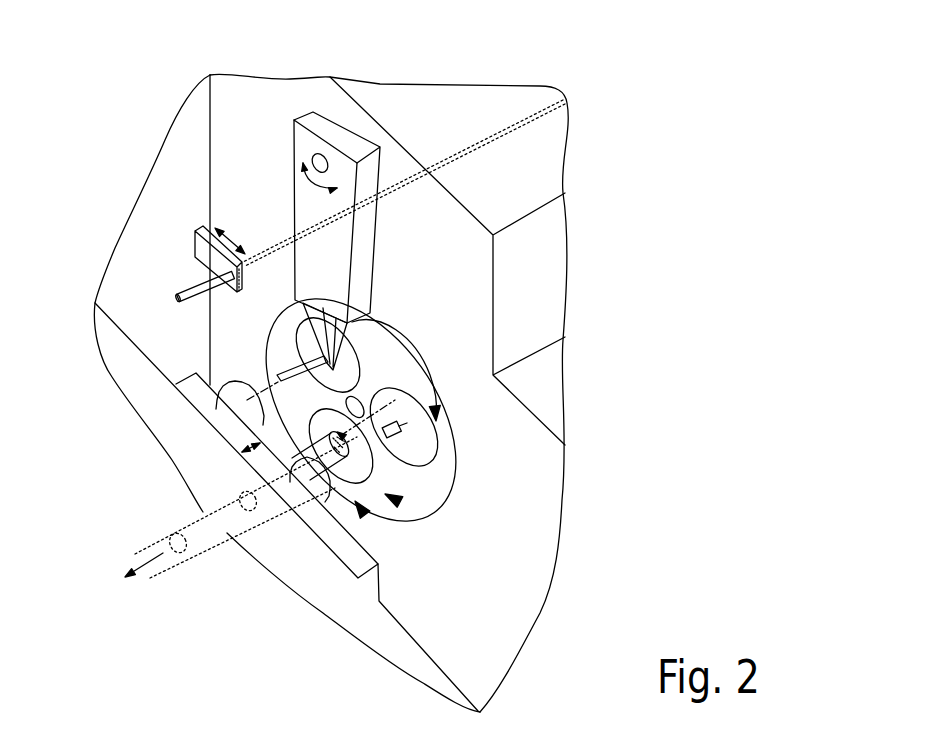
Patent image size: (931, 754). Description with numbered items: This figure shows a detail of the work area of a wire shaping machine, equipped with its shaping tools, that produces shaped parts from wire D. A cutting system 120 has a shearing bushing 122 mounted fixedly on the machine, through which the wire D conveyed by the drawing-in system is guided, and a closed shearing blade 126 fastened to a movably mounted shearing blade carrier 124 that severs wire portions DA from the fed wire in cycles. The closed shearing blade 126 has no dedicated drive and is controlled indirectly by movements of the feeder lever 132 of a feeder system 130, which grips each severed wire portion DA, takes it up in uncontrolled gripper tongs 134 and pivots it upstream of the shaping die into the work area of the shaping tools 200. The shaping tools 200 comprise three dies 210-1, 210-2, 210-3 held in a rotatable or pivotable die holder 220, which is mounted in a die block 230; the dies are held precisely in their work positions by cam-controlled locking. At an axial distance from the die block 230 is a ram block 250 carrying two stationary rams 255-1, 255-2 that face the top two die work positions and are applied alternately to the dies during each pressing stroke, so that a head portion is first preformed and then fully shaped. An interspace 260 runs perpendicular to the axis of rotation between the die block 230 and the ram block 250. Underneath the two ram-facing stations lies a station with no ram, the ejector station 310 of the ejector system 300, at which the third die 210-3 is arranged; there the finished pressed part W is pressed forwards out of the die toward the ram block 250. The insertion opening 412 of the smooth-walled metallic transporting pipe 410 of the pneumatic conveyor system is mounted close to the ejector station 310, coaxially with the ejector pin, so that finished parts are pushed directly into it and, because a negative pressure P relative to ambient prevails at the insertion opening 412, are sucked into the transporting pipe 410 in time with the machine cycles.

The cutting system 120 is at (184, 227).
The shearing bushing 122 is at (265, 270).
The shearing blade carrier 124 is at (197, 247).
The closed shearing blade 126 is at (233, 282).
The feeder system 130 is at (402, 262).
The feeder lever 132 is at (360, 290).
The gripper tongs 134 is at (357, 325).
The shaping tools 200 is at (493, 463).
The first die 210-1 is at (343, 365).
The second die 210-2 is at (423, 442).
The third die 210-3 is at (365, 513).
The die holder 220 is at (442, 468).
The die block 230 is at (485, 632).
The ram block 250 is at (347, 553).
The first stationary ram 255-1 is at (225, 393).
The second stationary ram 255-2 is at (312, 505).
The interspace 260 is at (480, 672).
The ejector system 300 is at (399, 504).
The ejector station 310 is at (363, 516).
The transporting pipe 410 is at (162, 563).
The insertion opening 412 is at (347, 457).
The wire D is at (465, 150).
The wire portion DA is at (187, 303).
The pressed part P is at (200, 530).
The pressed part W is at (182, 540).